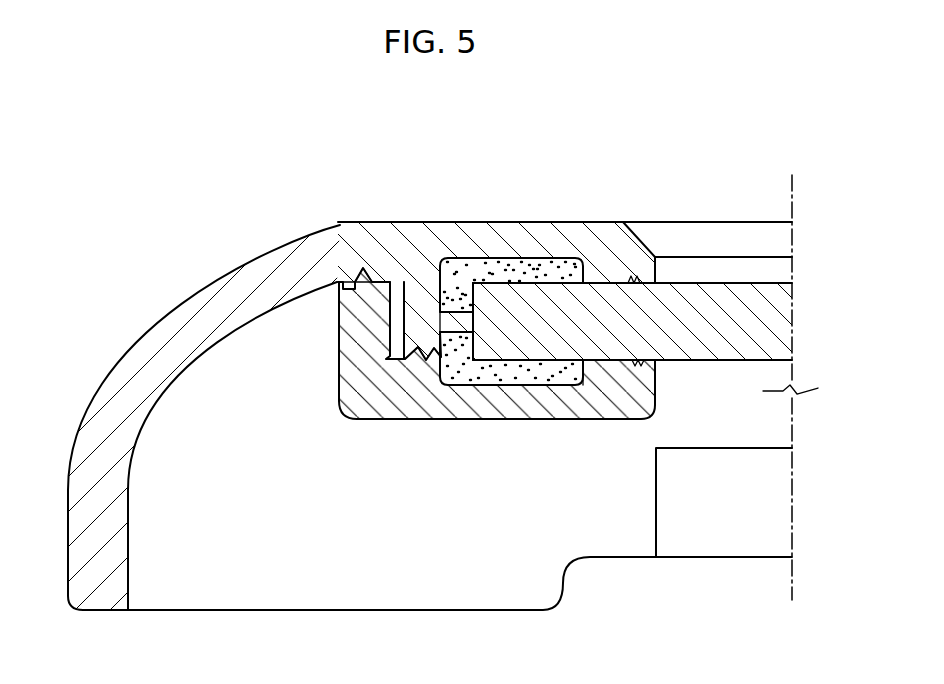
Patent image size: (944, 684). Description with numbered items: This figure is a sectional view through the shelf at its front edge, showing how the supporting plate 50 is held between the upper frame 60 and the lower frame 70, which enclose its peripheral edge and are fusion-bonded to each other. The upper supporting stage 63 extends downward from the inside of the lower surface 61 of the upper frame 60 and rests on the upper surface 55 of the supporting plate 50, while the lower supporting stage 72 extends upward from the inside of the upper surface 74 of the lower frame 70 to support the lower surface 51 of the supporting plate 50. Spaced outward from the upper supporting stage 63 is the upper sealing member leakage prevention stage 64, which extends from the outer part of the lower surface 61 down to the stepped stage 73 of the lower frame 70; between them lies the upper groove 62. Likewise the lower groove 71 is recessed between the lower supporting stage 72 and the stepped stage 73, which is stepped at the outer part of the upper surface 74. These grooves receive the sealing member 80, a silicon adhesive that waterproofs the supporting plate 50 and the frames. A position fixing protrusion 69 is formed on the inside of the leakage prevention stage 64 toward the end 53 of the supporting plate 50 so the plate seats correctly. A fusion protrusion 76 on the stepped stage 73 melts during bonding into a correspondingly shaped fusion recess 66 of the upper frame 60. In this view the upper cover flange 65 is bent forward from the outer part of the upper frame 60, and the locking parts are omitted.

The supporting plate 50 is at (765, 322).
The lower surface of the supporting plate 51 is at (750, 362).
The end of the supporting plate 53 is at (490, 378).
The upper surface of the supporting plate 55 is at (742, 282).
The upper frame 60 is at (530, 240).
The lower surface of the upper frame 61 is at (495, 268).
The upper groove 62 is at (548, 268).
The upper supporting stage 63 is at (607, 290).
The upper sealing member leakage prevention stage 64 is at (400, 278).
The upper cover flange 65 is at (118, 398).
The fusion recess 66 is at (340, 283).
The position fixing protrusion 69 is at (470, 330).
The lower frame 70 is at (585, 408).
The lower groove 71 is at (448, 386).
The lower supporting stage 72 is at (612, 385).
The stepped stage 73 is at (378, 405).
The upper surface of the lower frame 74 is at (565, 388).
The fusion protrusion 76 is at (378, 283).
The sealing member 80 is at (470, 300).